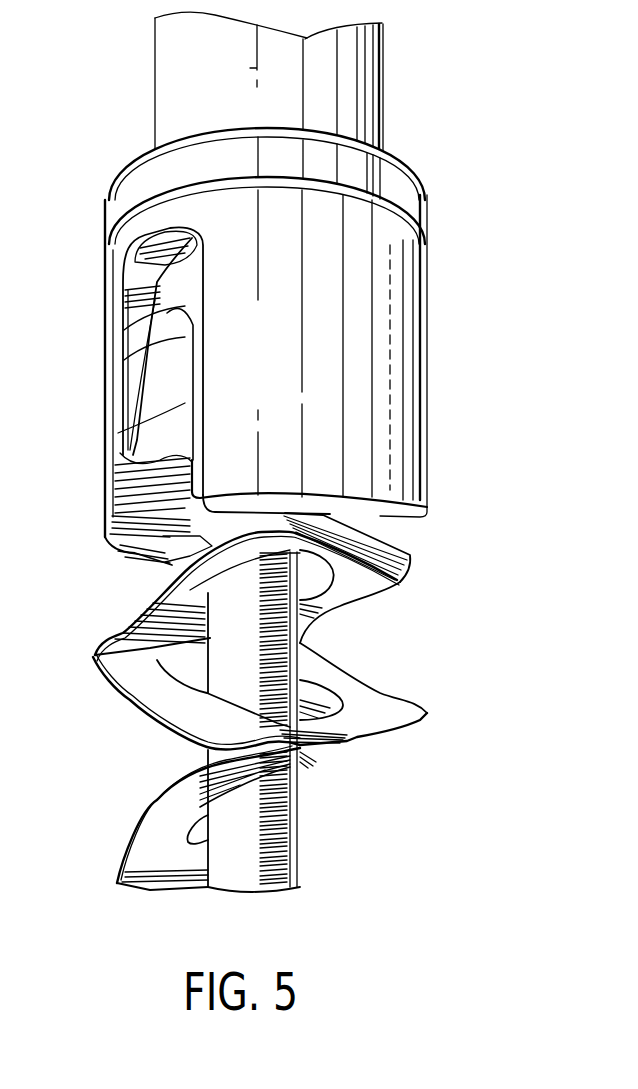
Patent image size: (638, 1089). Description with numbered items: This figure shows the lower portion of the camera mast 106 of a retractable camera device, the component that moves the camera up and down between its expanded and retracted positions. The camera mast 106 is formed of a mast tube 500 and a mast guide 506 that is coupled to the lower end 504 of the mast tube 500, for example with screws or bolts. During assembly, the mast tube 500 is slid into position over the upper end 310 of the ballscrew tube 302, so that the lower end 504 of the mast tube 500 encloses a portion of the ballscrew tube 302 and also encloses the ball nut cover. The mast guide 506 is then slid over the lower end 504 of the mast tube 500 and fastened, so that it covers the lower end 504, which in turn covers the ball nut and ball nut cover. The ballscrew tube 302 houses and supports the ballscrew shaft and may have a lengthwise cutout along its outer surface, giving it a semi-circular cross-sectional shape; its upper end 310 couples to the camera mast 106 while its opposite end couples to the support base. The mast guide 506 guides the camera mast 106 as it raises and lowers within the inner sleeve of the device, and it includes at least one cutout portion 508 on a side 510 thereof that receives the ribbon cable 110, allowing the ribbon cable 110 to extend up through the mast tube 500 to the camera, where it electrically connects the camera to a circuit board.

The mast tube 500 is at (175, 38).
The camera mast 106 is at (388, 65).
The side 510 is at (117, 197).
The mast guide 506 is at (428, 386).
The cutout portion 508 is at (115, 298).
The lower end 504 is at (428, 509).
The upper end 310 is at (360, 522).
The ribbon cable 110 is at (100, 647).
The ballscrew tube 302 is at (212, 757).